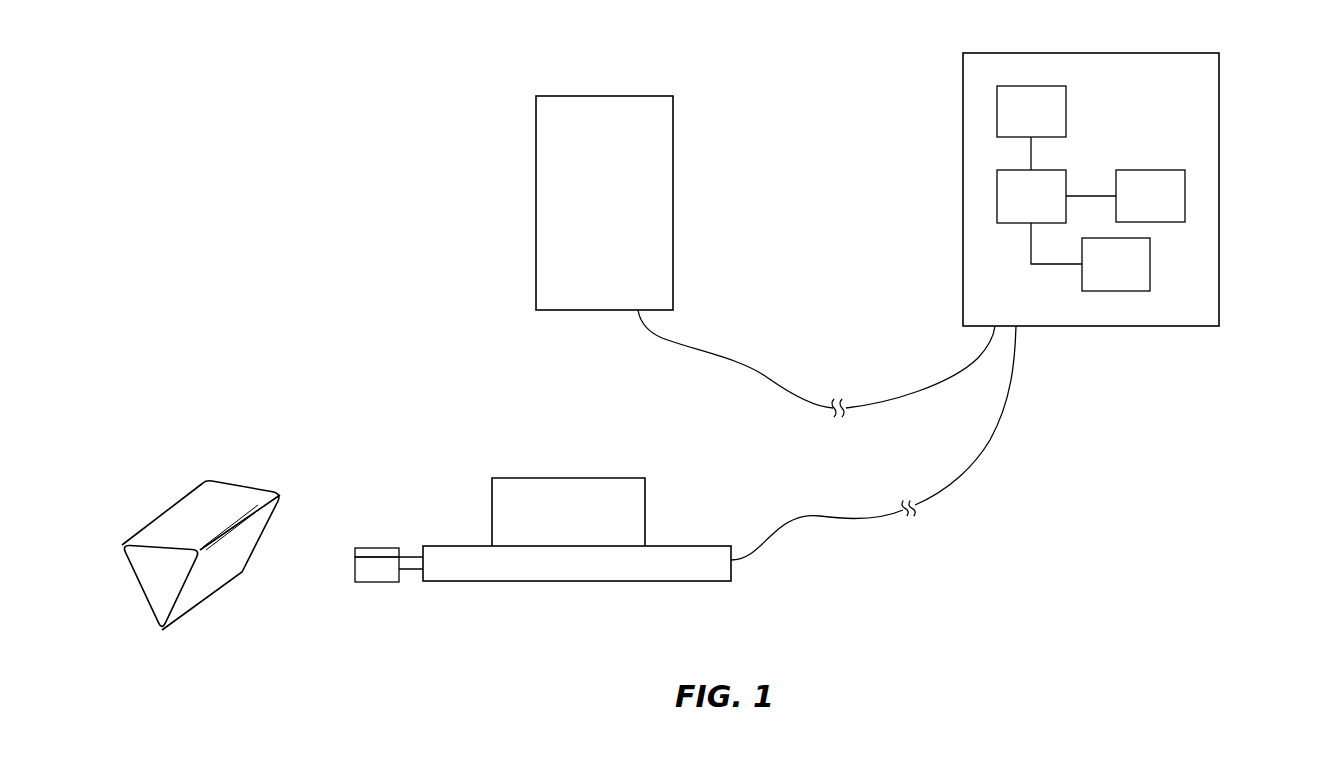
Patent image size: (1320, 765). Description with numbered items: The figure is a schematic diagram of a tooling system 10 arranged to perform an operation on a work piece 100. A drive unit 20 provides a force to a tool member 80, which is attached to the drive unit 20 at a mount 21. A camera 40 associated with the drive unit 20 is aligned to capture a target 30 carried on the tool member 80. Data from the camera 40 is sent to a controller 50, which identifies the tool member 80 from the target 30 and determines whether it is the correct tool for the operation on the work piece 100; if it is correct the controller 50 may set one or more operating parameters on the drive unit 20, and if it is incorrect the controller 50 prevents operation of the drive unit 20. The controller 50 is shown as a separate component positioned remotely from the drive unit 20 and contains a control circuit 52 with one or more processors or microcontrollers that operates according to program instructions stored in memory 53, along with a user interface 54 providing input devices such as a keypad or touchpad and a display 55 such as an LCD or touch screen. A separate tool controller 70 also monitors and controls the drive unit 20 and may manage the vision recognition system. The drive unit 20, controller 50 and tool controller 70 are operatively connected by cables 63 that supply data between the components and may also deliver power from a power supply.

The tooling system 10 is at (1183, 537).
The drive unit 20 is at (485, 572).
The mount 21 is at (415, 565).
The target 30 is at (373, 552).
The camera 40 is at (508, 497).
The controller 50 is at (1220, 128).
The control circuit 52 is at (1043, 207).
The memory 53 is at (1162, 207).
The user interface 54 is at (1128, 276).
The display 55 is at (1043, 124).
The cables 63 is at (725, 355).
The tool controller 70 is at (673, 132).
The tool member 80 is at (373, 577).
The work piece 100 is at (145, 583).